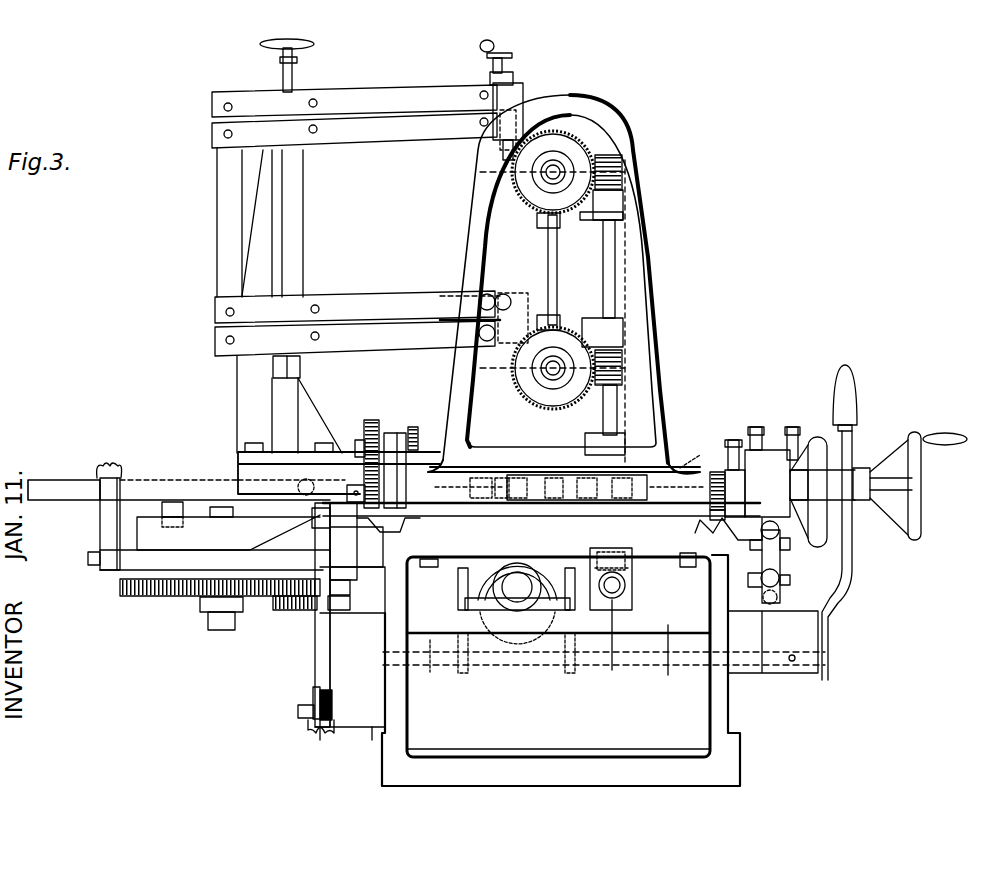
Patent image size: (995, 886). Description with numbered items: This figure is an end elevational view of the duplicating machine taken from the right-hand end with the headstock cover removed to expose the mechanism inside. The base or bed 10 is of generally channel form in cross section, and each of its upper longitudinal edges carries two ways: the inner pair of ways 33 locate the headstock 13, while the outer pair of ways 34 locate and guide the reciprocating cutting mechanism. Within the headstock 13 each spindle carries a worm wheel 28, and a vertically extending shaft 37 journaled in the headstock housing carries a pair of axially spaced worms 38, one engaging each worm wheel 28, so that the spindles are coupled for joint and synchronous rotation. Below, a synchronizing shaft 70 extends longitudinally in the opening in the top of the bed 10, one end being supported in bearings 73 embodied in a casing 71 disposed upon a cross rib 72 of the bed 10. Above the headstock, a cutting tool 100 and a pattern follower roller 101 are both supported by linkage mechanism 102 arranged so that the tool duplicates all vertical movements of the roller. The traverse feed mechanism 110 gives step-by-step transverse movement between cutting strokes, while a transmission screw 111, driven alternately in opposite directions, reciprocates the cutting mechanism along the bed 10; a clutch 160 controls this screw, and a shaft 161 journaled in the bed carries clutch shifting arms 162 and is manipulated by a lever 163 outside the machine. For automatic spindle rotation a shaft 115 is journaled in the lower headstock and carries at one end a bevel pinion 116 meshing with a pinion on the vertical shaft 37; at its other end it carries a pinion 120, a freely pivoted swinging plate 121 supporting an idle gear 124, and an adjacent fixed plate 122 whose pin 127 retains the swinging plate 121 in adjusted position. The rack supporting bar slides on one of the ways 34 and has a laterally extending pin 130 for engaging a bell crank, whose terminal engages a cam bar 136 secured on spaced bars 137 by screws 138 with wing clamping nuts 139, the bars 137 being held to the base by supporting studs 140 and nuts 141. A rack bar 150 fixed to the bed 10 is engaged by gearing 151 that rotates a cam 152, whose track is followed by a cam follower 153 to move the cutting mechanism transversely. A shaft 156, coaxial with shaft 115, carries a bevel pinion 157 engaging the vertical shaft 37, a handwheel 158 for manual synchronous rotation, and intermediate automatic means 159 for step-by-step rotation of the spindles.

The base or bed 10 is at (722, 710).
The headstock 13 is at (563, 93).
The worm wheel 28 is at (570, 150).
The inner pair of ways 33 is at (430, 522).
The outer pair of ways 34 is at (368, 520).
The vertical shaft 37 is at (612, 265).
The worms 38 is at (622, 170).
The synchronizing shaft 70 is at (612, 587).
The casing 71 is at (630, 575).
The cross rib 72 is at (668, 675).
The bearings 73 is at (612, 670).
The cutting tool 100 is at (497, 440).
The pattern follower roller 101 is at (500, 152).
The linkage mechanism 102 is at (395, 85).
The traverse feed mechanism 110 is at (758, 452).
The transmission screw 111 is at (517, 600).
The shaft 115 is at (495, 492).
The bevel pinion 116 is at (560, 500).
The pinion 120 is at (363, 484).
The swinging plate 121 is at (370, 445).
The fixed plate 122 is at (398, 445).
The second idle gear 124 is at (360, 440).
The pin 127 is at (413, 427).
The laterally extending pin 130 is at (345, 515).
The cam bar 136 is at (314, 693).
The spaced bars 137 is at (330, 712).
The screws 138 is at (321, 735).
The wing clamping nuts 139 is at (310, 730).
The supporting pins or studs 140 is at (365, 727).
The nuts 141 is at (305, 720).
The rack bar 150 is at (362, 600).
The gearing 151 is at (153, 598).
The cam 152 is at (150, 515).
The cam follower 153 is at (178, 505).
The shaft 156 is at (718, 475).
The bevel pinion 157 is at (678, 468).
The handwheel 158 is at (812, 440).
The automatic means 159 is at (733, 440).
The clutch 160 is at (490, 500).
The shaft 161 is at (430, 672).
The clutch shifting arms 162 is at (460, 590).
The lever 163 is at (855, 568).